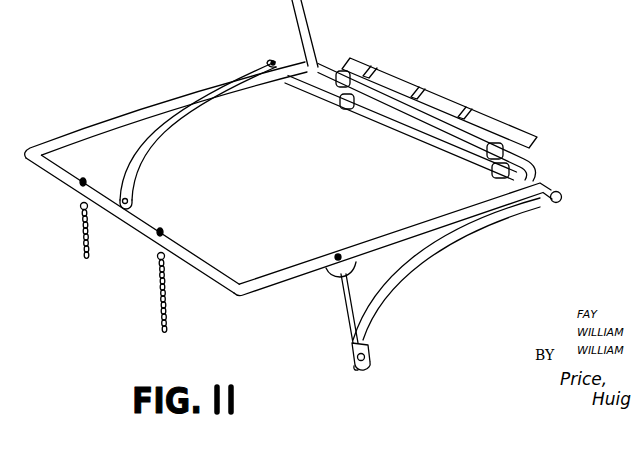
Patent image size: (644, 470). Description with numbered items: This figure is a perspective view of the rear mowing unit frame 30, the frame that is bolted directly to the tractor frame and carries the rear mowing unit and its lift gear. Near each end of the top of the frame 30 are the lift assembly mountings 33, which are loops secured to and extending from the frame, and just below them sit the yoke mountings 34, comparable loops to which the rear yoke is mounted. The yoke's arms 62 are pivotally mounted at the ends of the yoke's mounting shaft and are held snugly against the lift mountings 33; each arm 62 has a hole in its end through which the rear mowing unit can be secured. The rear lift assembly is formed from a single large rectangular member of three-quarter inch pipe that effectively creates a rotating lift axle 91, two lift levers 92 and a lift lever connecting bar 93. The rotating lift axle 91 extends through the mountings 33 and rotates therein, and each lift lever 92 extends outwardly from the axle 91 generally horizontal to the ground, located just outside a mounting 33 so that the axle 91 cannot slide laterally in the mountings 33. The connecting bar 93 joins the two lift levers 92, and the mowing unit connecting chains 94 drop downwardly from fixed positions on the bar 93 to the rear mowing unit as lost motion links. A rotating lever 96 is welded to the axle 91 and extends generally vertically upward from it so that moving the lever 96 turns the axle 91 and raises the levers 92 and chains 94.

The rear mowing unit frame 30 is at (560, 155).
The lift assembly mountings 33 is at (346, 72).
The yoke mountings 34 is at (347, 108).
The arms 62 is at (207, 117).
The rotating lift axle 91 is at (440, 112).
The lift levers 92 is at (165, 104).
The lift lever connecting bar 93 is at (136, 218).
The mowing unit connecting chains 94 is at (80, 238).
The rotating lever 96 is at (308, 29).